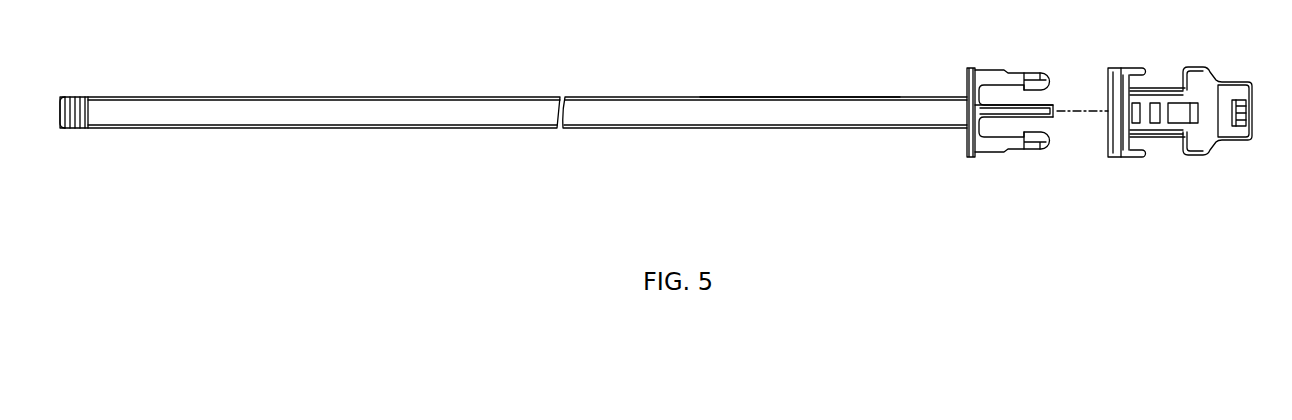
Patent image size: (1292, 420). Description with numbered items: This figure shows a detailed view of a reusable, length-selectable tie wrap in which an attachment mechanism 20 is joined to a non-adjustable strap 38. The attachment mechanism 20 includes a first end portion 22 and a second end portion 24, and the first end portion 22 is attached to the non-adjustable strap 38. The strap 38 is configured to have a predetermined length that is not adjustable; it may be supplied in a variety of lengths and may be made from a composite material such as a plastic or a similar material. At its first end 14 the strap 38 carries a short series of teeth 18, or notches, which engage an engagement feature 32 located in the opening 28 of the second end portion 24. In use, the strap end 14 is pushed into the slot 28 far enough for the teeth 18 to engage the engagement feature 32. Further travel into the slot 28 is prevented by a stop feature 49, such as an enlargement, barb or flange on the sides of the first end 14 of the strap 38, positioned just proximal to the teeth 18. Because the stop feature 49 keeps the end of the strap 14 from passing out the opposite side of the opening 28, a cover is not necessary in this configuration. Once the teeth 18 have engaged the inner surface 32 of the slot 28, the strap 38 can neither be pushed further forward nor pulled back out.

The first end 14 is at (174, 117).
The teeth 18 is at (78, 98).
The stop feature 49 is at (118, 59).
The non-adjustable strap 38 is at (742, 108).
The attachment mechanism 20 is at (1128, 100).
The first end portion 22 is at (1013, 150).
The second end portion 24 is at (1199, 113).
The opening 28 is at (1250, 82).
The engagement feature 32 is at (1247, 77).